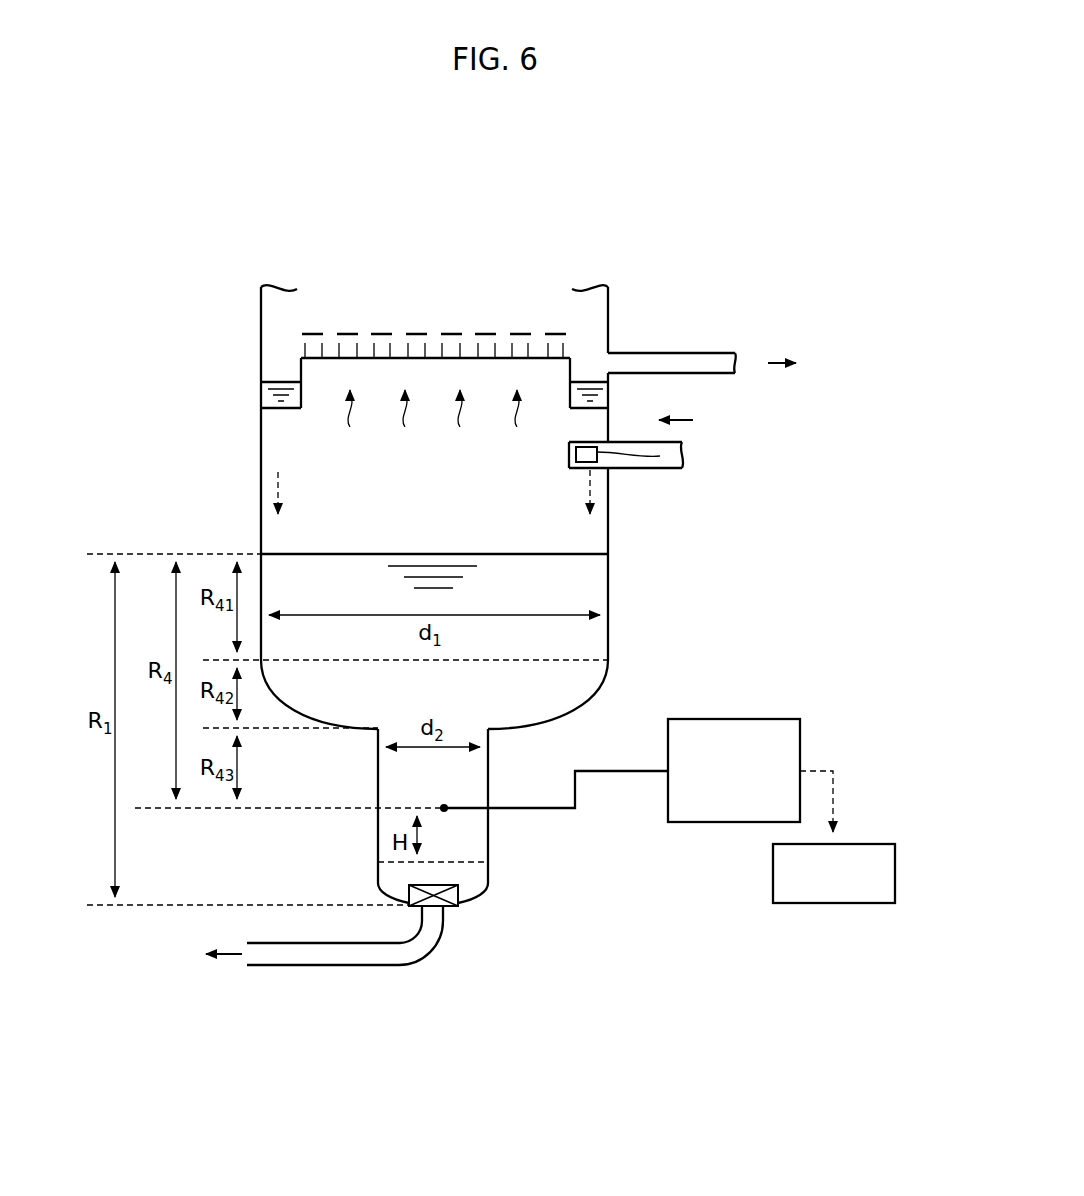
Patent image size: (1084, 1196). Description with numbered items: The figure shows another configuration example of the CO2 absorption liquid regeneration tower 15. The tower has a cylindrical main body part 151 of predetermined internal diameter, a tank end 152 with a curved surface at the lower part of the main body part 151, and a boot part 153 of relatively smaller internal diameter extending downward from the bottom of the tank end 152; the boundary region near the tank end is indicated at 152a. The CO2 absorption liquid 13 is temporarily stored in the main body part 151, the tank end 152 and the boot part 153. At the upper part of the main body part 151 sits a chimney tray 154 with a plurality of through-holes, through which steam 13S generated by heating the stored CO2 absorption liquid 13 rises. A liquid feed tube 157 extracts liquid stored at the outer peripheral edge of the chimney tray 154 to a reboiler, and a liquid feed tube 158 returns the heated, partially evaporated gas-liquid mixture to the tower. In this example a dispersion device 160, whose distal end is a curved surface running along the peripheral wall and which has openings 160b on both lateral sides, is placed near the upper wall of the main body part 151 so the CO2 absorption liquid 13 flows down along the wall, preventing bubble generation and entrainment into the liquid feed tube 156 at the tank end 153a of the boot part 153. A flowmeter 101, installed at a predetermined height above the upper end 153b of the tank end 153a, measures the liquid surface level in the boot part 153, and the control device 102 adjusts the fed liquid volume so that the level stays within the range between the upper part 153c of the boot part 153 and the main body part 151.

The CO2 absorption liquid 13 is at (782, 361).
The steam 13S is at (520, 405).
The CO2 absorption liquid regeneration tower 15 is at (614, 311).
The main body part 151 is at (608, 593).
The tank end 152 is at (590, 693).
The upper end of bottom portion 152a is at (575, 658).
The boot part 153 is at (488, 840).
The tank end of the boot part 153a is at (475, 903).
The upper end of the tank end 153b is at (448, 862).
The upper part of the boot part 153c is at (402, 800).
The chimney tray 154 is at (330, 333).
The liquid feed tube 156 is at (412, 950).
The liquid feed tube 157 is at (688, 353).
The liquid feed tube 158 is at (665, 438).
The dispersion device 160 is at (569, 452).
The openings 160b is at (647, 470).
The flowmeter 101 is at (752, 719).
The control device 102 is at (855, 844).